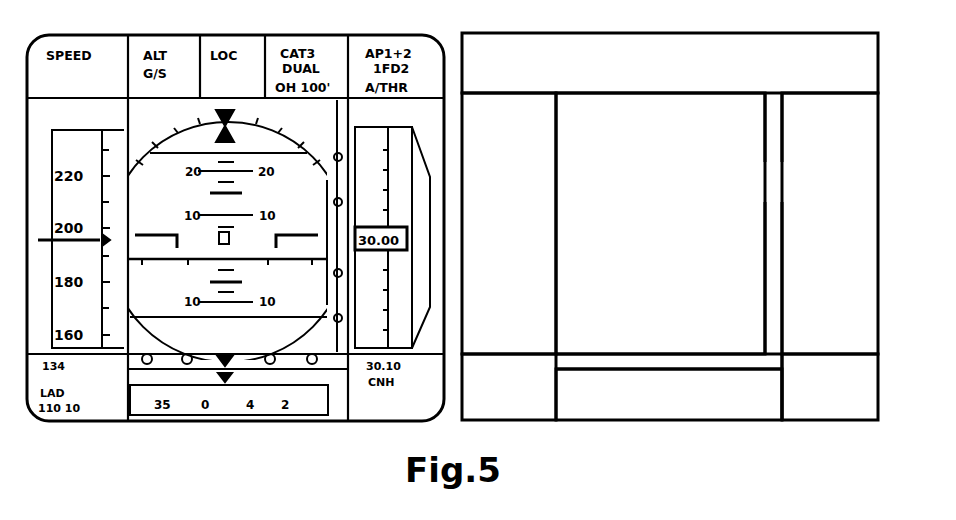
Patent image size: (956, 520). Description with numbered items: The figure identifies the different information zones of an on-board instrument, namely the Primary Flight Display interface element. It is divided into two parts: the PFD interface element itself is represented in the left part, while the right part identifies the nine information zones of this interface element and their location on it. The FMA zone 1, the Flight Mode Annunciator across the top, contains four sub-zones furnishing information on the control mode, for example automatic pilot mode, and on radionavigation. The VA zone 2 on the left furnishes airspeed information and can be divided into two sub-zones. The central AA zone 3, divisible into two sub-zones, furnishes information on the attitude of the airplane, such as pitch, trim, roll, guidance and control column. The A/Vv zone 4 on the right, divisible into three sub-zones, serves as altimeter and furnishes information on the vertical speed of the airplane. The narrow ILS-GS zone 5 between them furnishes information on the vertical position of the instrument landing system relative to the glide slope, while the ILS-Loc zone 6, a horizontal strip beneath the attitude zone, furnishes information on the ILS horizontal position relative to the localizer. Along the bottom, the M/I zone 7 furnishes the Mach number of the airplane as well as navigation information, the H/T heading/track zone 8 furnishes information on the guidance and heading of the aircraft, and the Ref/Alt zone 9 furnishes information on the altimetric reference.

The FMA information zone 1 is at (670, 63).
The VA information zone 2 is at (509, 223).
The AA information zone 3 is at (660, 223).
The A/Vv information zone 4 is at (830, 223).
The ILS-GS information zone 5 is at (773, 256).
The ILS-Loc information zone 6 is at (669, 364).
The M/I information zone 7 is at (509, 387).
The H/T information zone 8 is at (669, 394).
The Ref/Alt information zone 9 is at (830, 387).